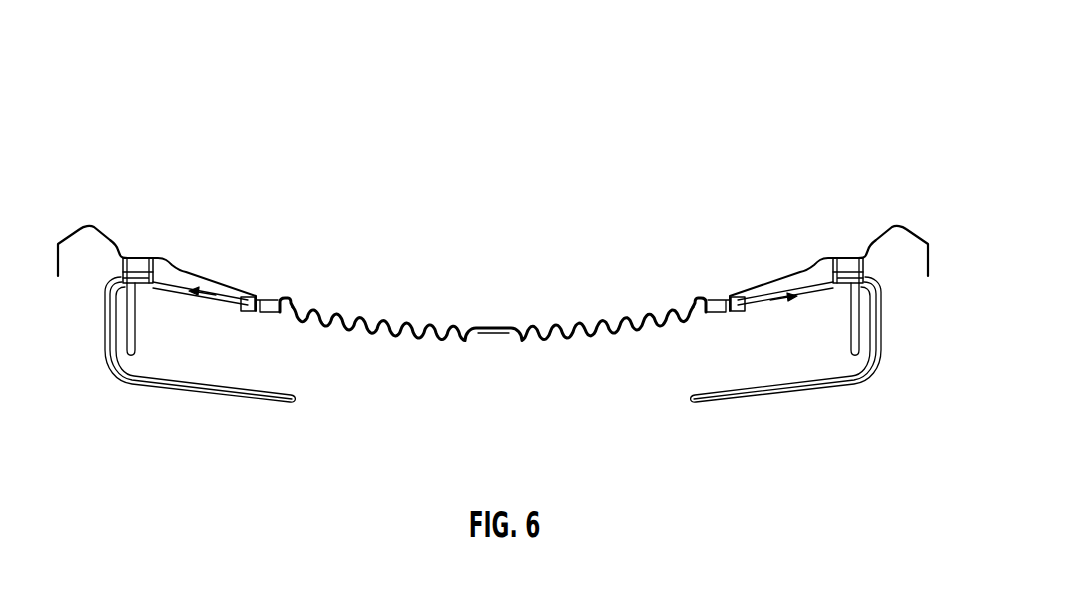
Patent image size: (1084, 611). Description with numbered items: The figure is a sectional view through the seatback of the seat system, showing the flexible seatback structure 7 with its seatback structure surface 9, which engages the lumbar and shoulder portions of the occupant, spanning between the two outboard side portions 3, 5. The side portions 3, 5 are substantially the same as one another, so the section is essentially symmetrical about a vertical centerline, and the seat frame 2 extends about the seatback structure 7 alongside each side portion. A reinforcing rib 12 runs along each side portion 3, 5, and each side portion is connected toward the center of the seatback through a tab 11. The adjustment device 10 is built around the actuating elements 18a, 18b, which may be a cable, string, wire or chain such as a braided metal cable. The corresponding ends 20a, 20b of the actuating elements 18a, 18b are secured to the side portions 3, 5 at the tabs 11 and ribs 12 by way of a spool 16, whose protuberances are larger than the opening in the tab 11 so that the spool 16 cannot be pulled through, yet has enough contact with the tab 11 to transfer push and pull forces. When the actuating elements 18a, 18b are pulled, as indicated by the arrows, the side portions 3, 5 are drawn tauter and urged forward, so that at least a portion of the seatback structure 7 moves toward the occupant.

The seatback structure 7 is at (196, 108).
The side portion 3 is at (58, 243).
The side portion 5 is at (930, 255).
The seat frame 2 is at (116, 268).
The adjustment device 10 is at (765, 316).
The reinforcing rib 12 is at (128, 330).
The spool 16 is at (247, 311).
The tab 11 is at (267, 314).
The actuating element 18a is at (180, 293).
The actuating element 18b is at (815, 294).
The end of actuating element 20a is at (283, 325).
The end of actuating element 20b is at (702, 322).
The seatback structure surface 9 is at (491, 328).